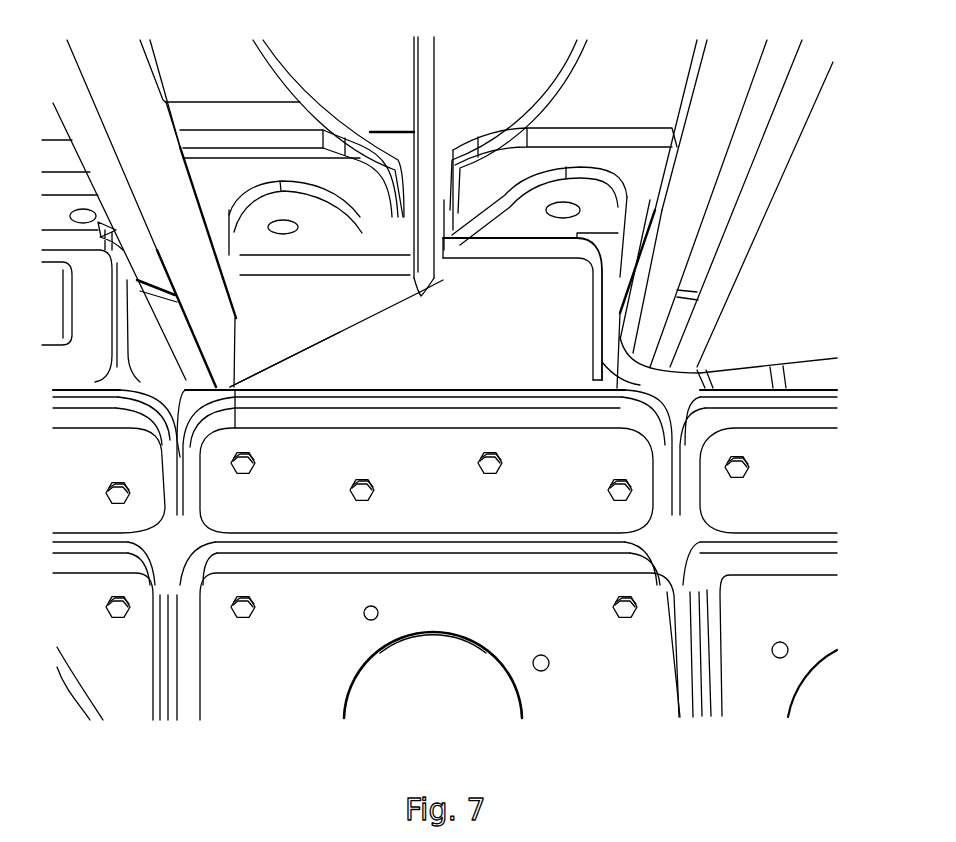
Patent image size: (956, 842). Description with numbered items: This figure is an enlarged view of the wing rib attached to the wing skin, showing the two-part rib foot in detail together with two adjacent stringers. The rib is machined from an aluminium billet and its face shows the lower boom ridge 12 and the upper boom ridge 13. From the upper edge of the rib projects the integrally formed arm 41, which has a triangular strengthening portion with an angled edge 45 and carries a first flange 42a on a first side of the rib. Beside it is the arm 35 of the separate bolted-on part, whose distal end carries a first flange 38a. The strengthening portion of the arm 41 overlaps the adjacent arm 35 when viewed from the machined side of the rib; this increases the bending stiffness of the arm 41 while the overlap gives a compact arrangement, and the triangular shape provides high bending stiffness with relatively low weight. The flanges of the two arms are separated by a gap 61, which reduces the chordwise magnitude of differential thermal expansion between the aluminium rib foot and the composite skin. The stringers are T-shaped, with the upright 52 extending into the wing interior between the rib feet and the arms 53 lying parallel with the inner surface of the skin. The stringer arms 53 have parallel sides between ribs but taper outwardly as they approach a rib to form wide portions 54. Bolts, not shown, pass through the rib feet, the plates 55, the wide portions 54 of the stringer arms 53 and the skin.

The lower boom ridge 12 is at (347, 563).
The upper boom ridge 13 is at (337, 418).
The arm 35 is at (273, 345).
The first flange 38a is at (252, 245).
The projecting arm 41 is at (520, 337).
The first flange 42a is at (523, 223).
The angled edge 45 is at (350, 328).
The upright 52 is at (133, 73).
The arms 53 is at (273, 57).
The wide portions 54 is at (360, 133).
The plates 55 is at (593, 140).
The gap 61 is at (420, 294).